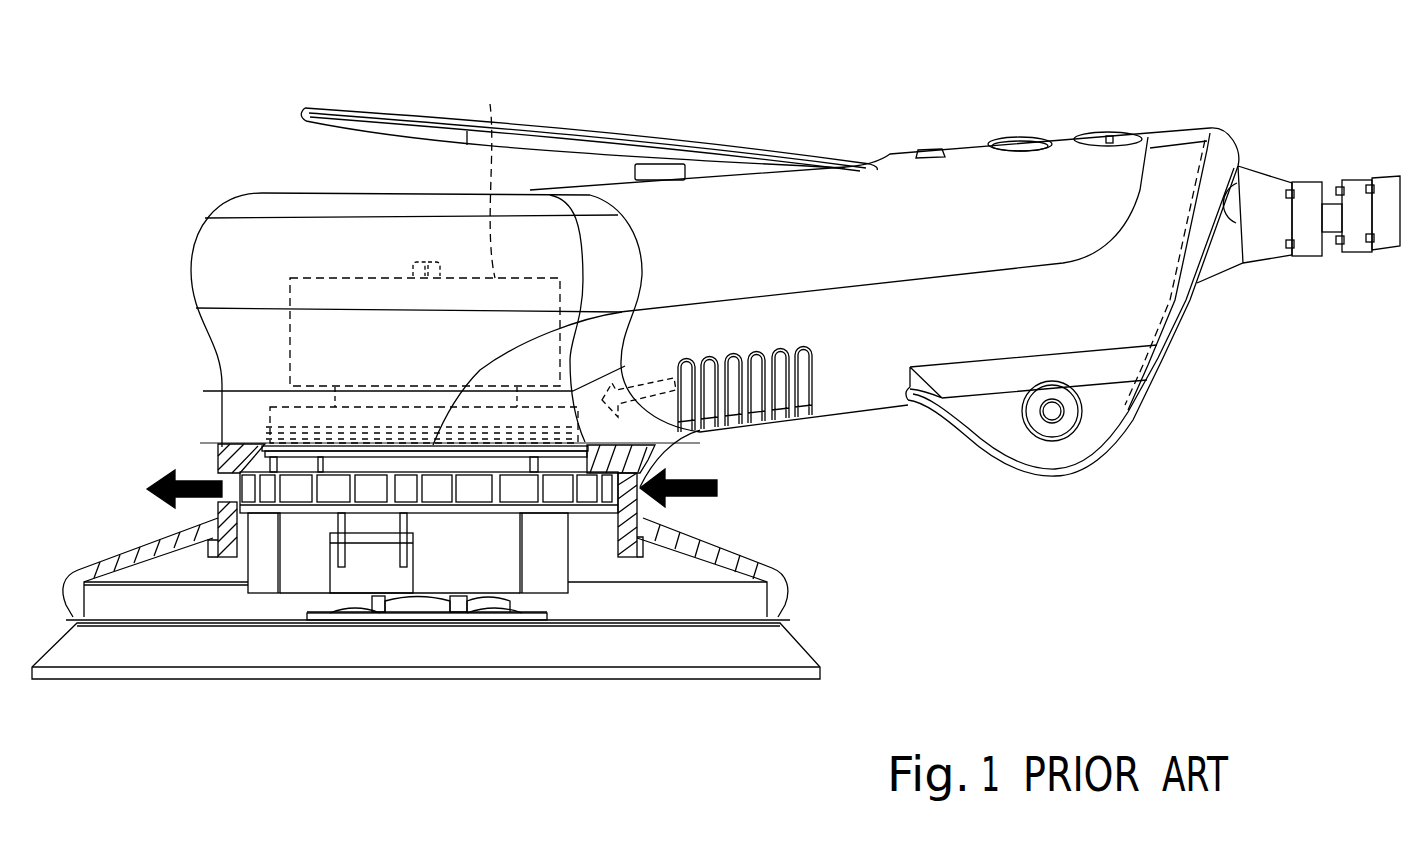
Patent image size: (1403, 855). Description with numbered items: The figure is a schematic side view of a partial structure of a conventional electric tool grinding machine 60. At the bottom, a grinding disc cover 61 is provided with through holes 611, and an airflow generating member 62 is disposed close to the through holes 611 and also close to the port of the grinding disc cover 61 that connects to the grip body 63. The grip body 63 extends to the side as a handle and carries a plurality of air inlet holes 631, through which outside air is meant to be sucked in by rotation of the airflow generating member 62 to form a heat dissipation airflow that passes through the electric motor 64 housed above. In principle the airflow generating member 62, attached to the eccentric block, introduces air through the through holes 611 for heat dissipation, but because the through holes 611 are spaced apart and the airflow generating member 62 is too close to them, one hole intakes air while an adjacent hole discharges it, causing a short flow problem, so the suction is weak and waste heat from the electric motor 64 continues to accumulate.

The electric tool grinding machine 60 is at (882, 52).
The grinding disc cover 61 is at (112, 558).
The through holes 611 is at (228, 488).
The airflow generating member 62 is at (472, 507).
The grip body 63 is at (242, 197).
The air inlet holes 631 is at (806, 395).
The electric motor 64 is at (589, 129).